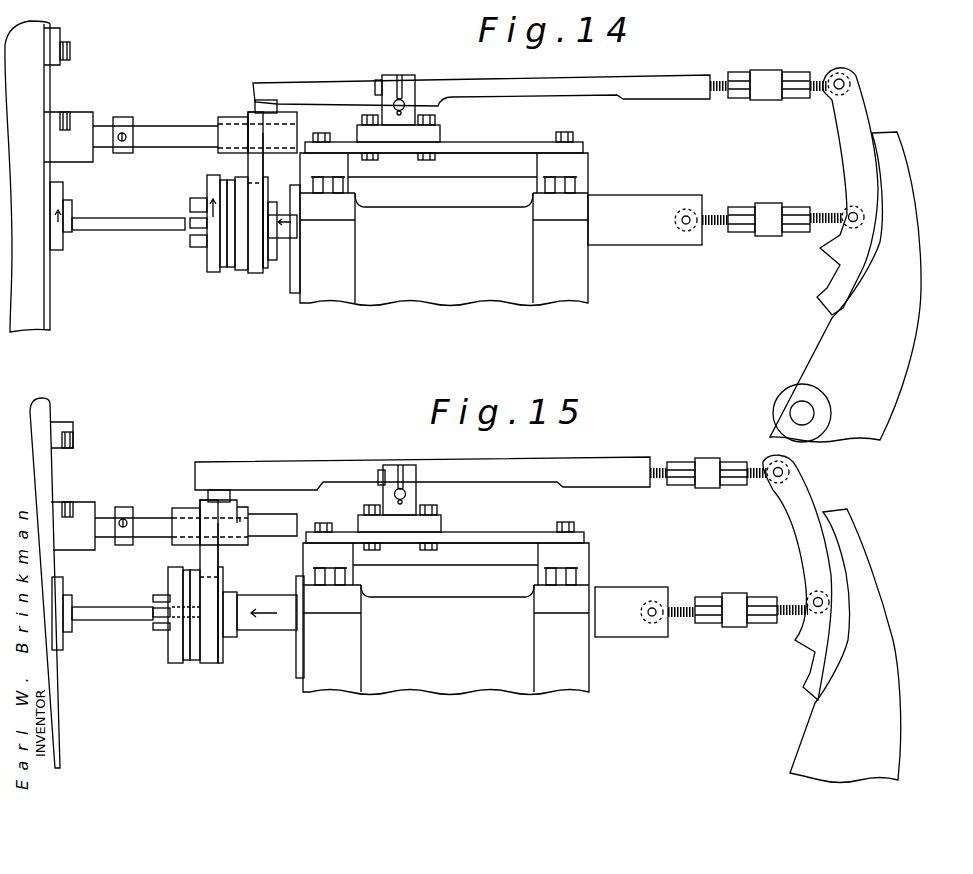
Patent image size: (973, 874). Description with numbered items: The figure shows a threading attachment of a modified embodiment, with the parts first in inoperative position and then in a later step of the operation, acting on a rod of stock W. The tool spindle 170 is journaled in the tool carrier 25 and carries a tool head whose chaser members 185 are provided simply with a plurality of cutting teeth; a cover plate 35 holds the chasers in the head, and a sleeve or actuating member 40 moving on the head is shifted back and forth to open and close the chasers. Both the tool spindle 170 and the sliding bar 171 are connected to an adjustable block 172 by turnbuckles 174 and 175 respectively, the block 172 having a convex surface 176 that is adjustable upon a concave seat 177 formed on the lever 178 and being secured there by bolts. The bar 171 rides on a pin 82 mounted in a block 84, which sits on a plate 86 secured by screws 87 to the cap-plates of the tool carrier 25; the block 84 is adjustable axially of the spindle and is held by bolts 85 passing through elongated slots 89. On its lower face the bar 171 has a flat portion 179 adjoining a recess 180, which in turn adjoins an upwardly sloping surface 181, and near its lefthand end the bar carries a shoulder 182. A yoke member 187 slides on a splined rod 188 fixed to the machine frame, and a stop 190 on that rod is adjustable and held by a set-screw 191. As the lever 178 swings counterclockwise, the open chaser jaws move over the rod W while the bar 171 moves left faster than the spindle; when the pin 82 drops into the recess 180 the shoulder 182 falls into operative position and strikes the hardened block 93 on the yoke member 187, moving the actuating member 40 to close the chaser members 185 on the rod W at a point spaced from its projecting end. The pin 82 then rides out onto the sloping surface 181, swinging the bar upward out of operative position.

In FIG. 14, the tool carrier 25 is at (334, 301).
In FIG. 15, the tool carrier 25 is at (342, 690).
In FIG. 14, the cover plate 35 is at (214, 272).
In FIG. 15, the cover plate 35 is at (182, 656).
In FIG. 14, the sleeve or actuating member 40 is at (264, 269).
In FIG. 15, the sleeve or actuating member 40 is at (228, 580).
In FIG. 14, the rod of stock W is at (125, 221).
In FIG. 15, the rod of stock W is at (122, 621).
In FIG. 14, the pin 82 is at (404, 103).
In FIG. 15, the pin 82 is at (416, 494).
In FIG. 14, the block 84 is at (398, 128).
In FIG. 15, the block 84 is at (399, 518).
In FIG. 15, the bolts 85 is at (432, 550).
In FIG. 14, the plate 86 is at (537, 142).
In FIG. 15, the plate 86 is at (508, 535).
In FIG. 14, the screws 87 is at (572, 135).
In FIG. 15, the screws 87 is at (574, 524).
In FIG. 14, the elongated slots 89 is at (378, 80).
In FIG. 15, the elongated slots 89 is at (381, 477).
In FIG. 14, the hardened block 93 is at (262, 106).
In FIG. 15, the hardened block 93 is at (212, 489).
In FIG. 14, the tool spindle 170 is at (641, 240).
In FIG. 15, the tool spindle 170 is at (275, 627).
In FIG. 14, the sliding bar 171 is at (657, 83).
In FIG. 15, the sliding bar 171 is at (585, 461).
In FIG. 14, the adjustable block 172 is at (858, 150).
In FIG. 15, the adjustable block 172 is at (802, 537).
In FIG. 14, the turnbuckle 174 is at (768, 233).
In FIG. 15, the turnbuckle 174 is at (735, 622).
In FIG. 14, the turnbuckle 175 is at (773, 99).
In FIG. 15, the turnbuckle 175 is at (708, 487).
In FIG. 14, the convex surface 176 is at (868, 120).
In FIG. 15, the convex surface 176 is at (825, 510).
In FIG. 14, the concave seat 177 is at (827, 288).
In FIG. 15, the concave seat 177 is at (808, 675).
In FIG. 14, the lever 178 is at (898, 366).
In FIG. 15, the lever 178 is at (888, 652).
In FIG. 14, the flat portion 179 is at (341, 100).
In FIG. 15, the flat portion 179 is at (289, 485).
In FIG. 14, the recess 180 is at (440, 106).
In FIG. 15, the recess 180 is at (353, 484).
In FIG. 14, the upwardly sloping surface 181 is at (512, 98).
In FIG. 15, the upwardly sloping surface 181 is at (517, 488).
In FIG. 14, the shoulder 182 is at (285, 104).
In FIG. 15, the shoulder 182 is at (214, 490).
In FIG. 14, the chaser members 185 is at (198, 243).
In FIG. 15, the chaser members 185 is at (158, 610).
In FIG. 14, the yoke member 187 is at (248, 165).
In FIG. 15, the yoke member 187 is at (220, 556).
In FIG. 14, the splined rod 188 is at (172, 125).
In FIG. 15, the splined rod 188 is at (160, 517).
In FIG. 14, the stop 190 is at (121, 116).
In FIG. 15, the stop 190 is at (123, 507).
In FIG. 14, the set-screw 191 is at (120, 141).
In FIG. 15, the set-screw 191 is at (122, 528).